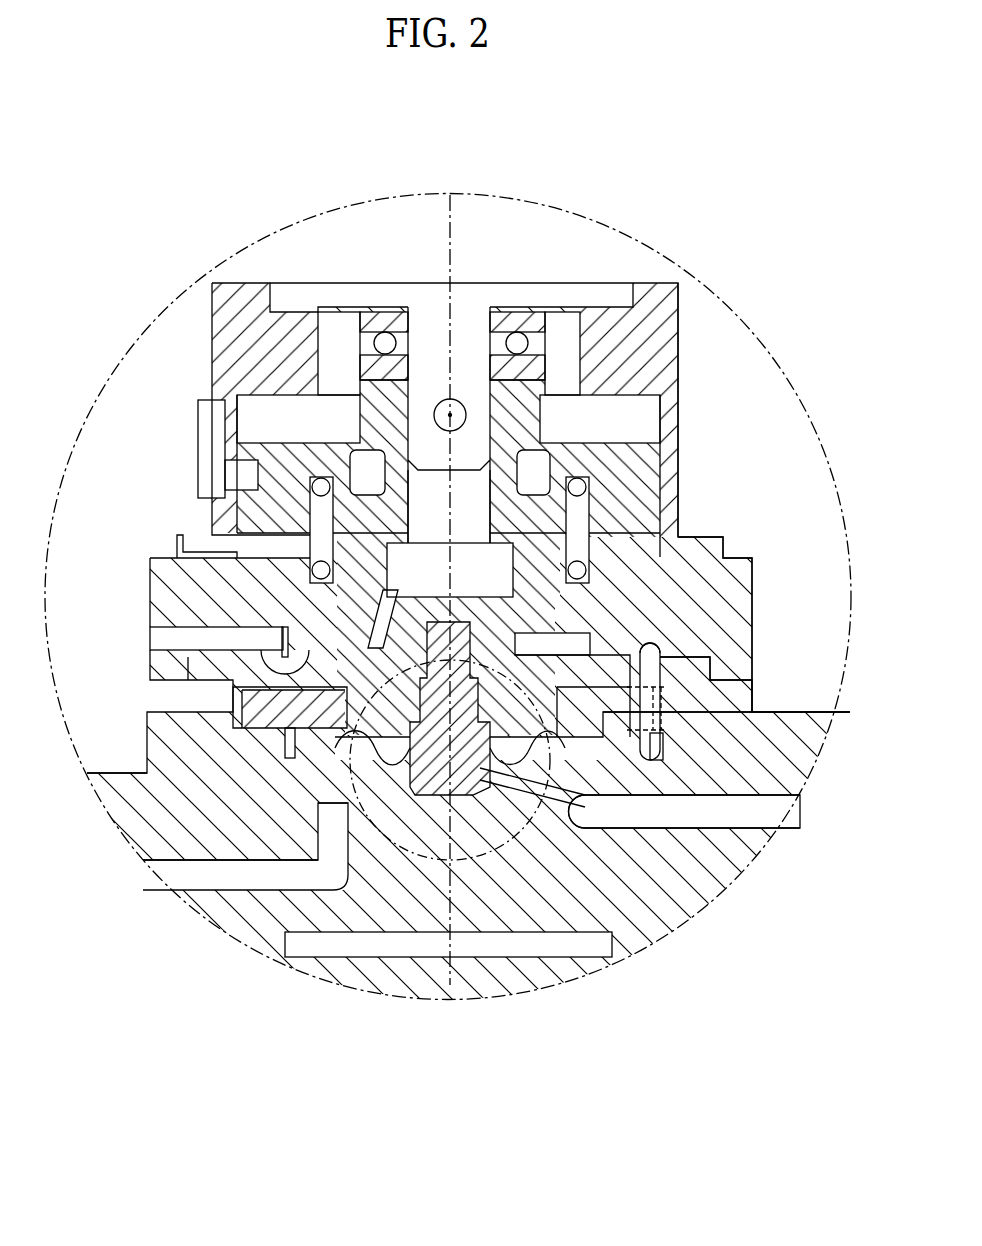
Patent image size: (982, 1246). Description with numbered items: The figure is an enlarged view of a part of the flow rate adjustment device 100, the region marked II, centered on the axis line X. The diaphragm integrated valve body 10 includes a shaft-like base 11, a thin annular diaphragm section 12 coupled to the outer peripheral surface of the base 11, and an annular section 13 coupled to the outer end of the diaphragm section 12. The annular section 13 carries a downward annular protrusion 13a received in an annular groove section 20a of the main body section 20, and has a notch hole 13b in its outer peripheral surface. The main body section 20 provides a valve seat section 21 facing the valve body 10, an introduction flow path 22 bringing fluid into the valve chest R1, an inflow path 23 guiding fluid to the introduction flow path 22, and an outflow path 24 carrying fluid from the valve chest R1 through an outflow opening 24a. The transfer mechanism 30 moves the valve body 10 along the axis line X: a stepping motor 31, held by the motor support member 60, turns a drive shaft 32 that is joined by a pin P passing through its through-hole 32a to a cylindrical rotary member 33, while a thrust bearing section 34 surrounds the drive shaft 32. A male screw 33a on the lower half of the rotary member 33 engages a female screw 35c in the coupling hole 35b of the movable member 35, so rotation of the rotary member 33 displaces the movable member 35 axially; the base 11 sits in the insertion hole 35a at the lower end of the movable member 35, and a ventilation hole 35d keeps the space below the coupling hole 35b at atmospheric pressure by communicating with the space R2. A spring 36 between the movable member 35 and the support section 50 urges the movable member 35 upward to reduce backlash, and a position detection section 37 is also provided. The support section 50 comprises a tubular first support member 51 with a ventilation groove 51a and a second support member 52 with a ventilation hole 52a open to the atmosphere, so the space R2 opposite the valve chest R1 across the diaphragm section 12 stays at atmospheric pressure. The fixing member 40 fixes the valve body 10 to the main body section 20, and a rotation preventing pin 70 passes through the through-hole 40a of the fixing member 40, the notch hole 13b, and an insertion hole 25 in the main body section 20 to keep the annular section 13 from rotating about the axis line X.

The flow rate adjustment device 100 is at (676, 155).
The diaphragm integrated valve body 10 is at (407, 822).
The base 11 is at (470, 790).
The diaphragm section 12 is at (377, 740).
The annular section 13 is at (235, 700).
The annular protrusion 13a is at (288, 748).
The notch hole 13b is at (692, 812).
The main body section 20 is at (697, 895).
The annular groove section 20a is at (590, 792).
The valve seat section 21 is at (488, 792).
The introduction flow path 22 is at (543, 785).
The inflow path 23 is at (765, 815).
The outflow path 24 is at (183, 862).
The outflow opening 24a is at (335, 822).
The insertion hole 25 is at (663, 747).
The transfer mechanism 30 is at (332, 372).
The stepping motor 31 is at (568, 240).
The drive shaft 32 is at (470, 307).
The through-hole 32a is at (445, 402).
The rotary member 33 is at (545, 424).
The male screw 33a is at (382, 520).
The thrust bearing section 34 is at (378, 310).
The movable member 35 is at (660, 462).
The insertion hole 35a is at (472, 637).
The coupling hole 35b is at (470, 590).
The female screw 35c is at (505, 582).
The ventilation hole 35d is at (385, 612).
The spring 36 is at (317, 563).
The position detection section 37 is at (225, 478).
The fixing member 40 is at (752, 693).
The through-hole 40a is at (652, 650).
The support section 50 is at (768, 605).
The first support member 51 is at (640, 620).
The ventilation groove 51a is at (273, 667).
The second support member 52 is at (752, 568).
The ventilation hole 52a is at (153, 643).
The motor support member 60 is at (678, 410).
The rotation preventing pin 70 is at (660, 700).
The pin P is at (458, 408).
The valve chest R1 is at (330, 780).
The space R2 is at (330, 640).
The section line II is at (428, 860).
The axis line X is at (458, 978).